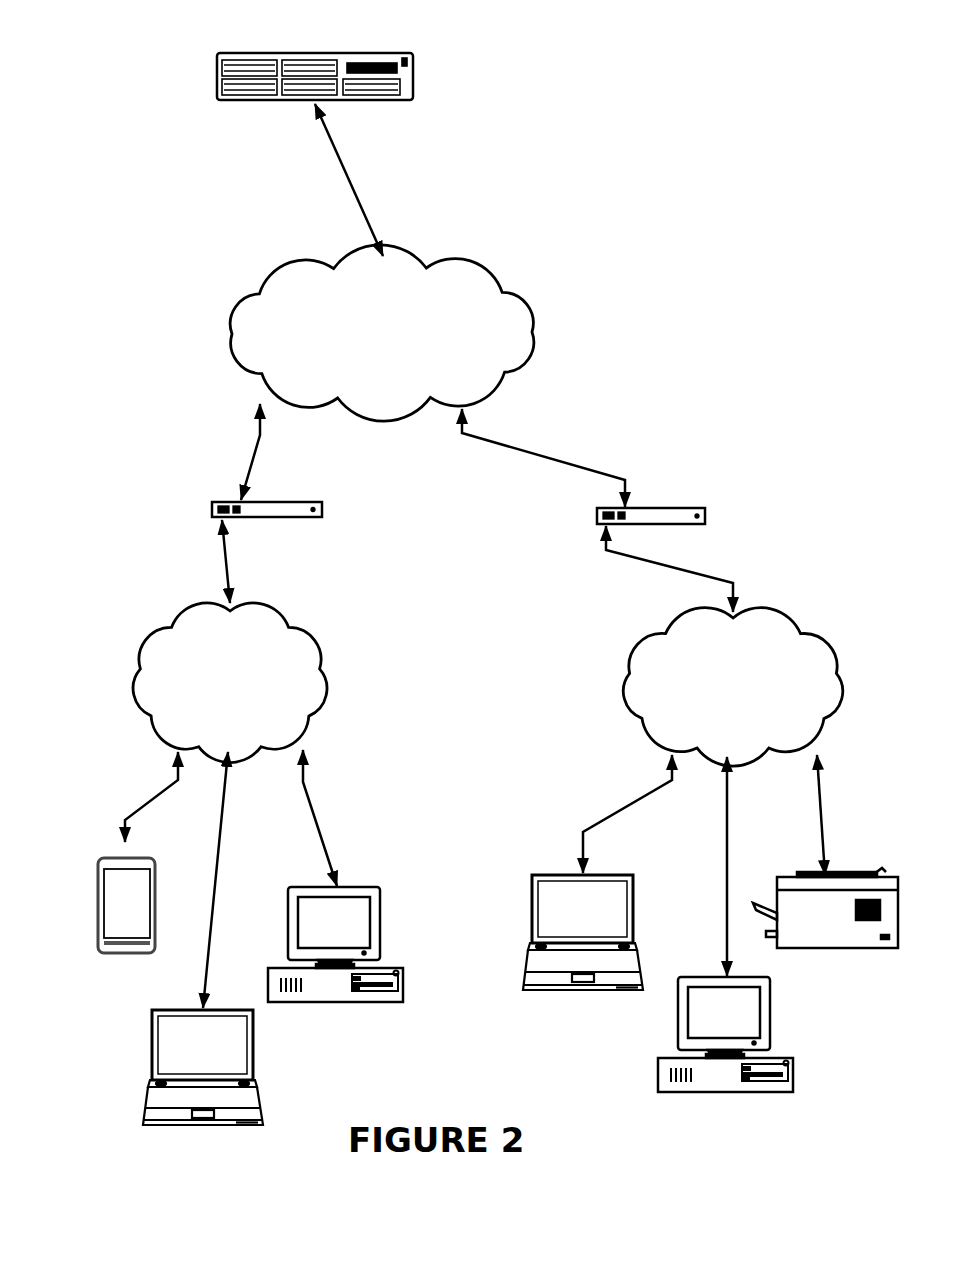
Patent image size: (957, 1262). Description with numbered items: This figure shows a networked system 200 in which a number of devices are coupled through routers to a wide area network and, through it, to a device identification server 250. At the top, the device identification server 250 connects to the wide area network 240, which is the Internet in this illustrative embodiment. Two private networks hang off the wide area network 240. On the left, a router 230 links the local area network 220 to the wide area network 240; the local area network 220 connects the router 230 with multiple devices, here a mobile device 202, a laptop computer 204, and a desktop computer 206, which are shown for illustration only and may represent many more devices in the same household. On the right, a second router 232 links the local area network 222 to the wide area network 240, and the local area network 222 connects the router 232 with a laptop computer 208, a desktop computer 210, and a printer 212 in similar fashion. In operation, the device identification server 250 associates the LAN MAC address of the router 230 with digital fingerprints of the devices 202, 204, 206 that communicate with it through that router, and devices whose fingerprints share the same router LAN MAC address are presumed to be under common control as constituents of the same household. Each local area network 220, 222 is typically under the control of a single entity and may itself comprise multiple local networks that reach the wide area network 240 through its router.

The network environment 200 is at (556, 128).
The device 202 is at (98, 908).
The device 204 is at (145, 1068).
The device 206 is at (337, 1003).
The device 208 is at (583, 992).
The device 210 is at (728, 1093).
The device 212 is at (827, 950).
The local area network 220 is at (230, 683).
The local area network 222 is at (732, 687).
The router 230 is at (265, 518).
The router 232 is at (652, 507).
The wide area network 240 is at (382, 333).
The device identification server 250 is at (318, 52).